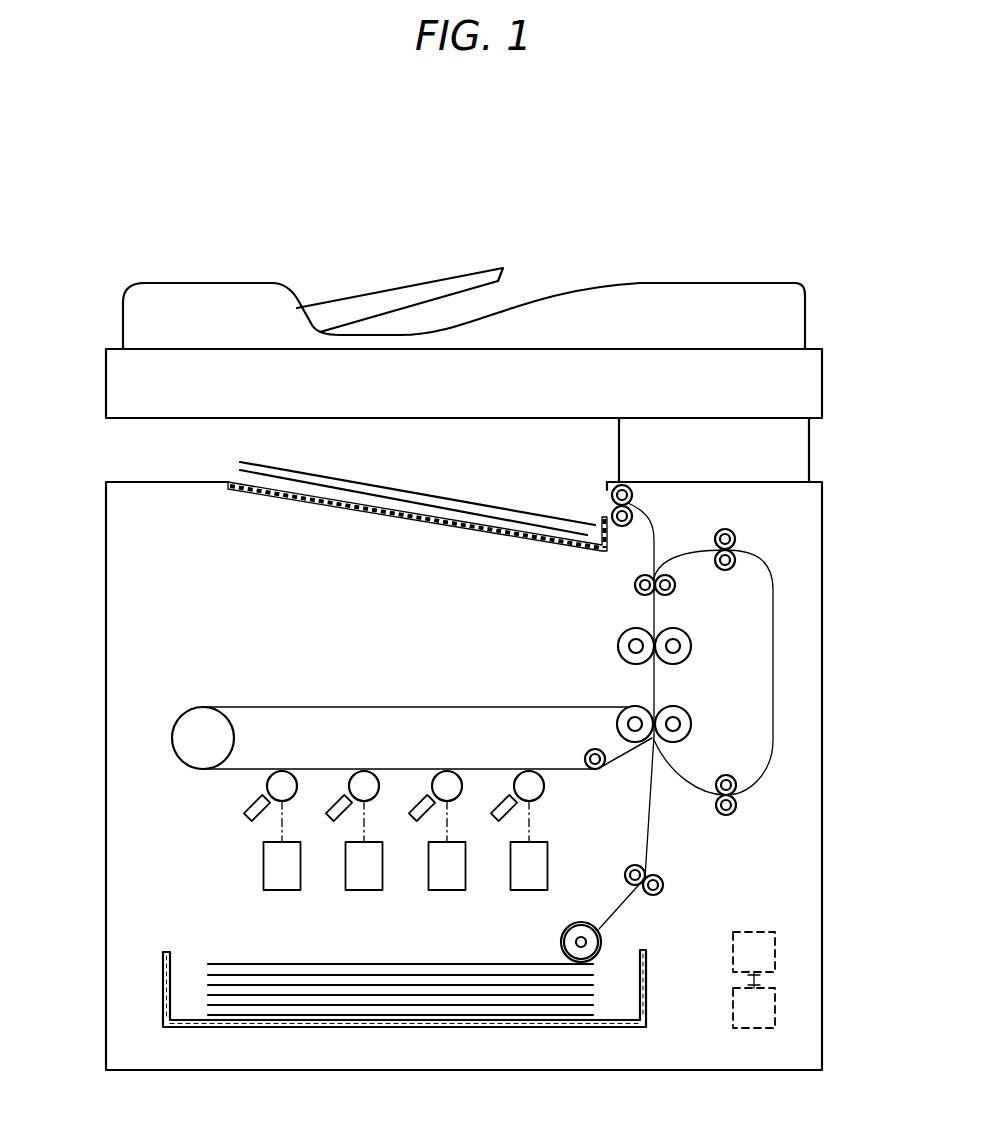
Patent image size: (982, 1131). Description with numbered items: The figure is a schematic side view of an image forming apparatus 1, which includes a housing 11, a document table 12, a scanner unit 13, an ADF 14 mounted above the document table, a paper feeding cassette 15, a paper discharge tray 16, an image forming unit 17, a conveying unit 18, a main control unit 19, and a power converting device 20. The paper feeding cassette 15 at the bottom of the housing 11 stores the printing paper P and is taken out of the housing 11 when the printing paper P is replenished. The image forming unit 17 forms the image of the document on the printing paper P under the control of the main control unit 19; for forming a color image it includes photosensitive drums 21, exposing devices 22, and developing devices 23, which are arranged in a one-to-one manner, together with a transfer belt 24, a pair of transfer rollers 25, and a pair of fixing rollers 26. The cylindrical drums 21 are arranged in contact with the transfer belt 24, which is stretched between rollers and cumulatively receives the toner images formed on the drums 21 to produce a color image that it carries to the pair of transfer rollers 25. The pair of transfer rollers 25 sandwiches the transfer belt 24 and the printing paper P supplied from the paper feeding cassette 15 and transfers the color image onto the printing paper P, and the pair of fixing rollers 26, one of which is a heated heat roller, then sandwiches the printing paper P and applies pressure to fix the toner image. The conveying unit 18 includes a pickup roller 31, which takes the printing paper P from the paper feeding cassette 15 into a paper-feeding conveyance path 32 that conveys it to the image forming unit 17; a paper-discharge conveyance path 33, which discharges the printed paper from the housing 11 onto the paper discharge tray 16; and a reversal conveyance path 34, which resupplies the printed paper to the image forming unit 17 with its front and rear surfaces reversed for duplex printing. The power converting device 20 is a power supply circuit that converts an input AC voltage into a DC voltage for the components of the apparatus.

The image forming apparatus 1 is at (470, 176).
The housing 11 is at (106, 552).
The document table 12 is at (105, 380).
The scanner unit 13 is at (230, 404).
The ADF 14 is at (216, 284).
The paper feeding cassette 15 is at (163, 985).
The paper discharge tray 16 is at (312, 499).
The image forming unit 17 is at (412, 745).
The conveying unit 18 is at (596, 612).
The main control unit 19 is at (775, 952).
The power converting device 20 is at (775, 1008).
The photosensitive drums 21 is at (282, 771).
The exposing devices 22 is at (282, 897).
The developing devices 23 is at (248, 814).
The transfer belt 24 is at (520, 706).
The pair of transfer rollers 25 is at (688, 708).
The pair of fixing rollers 26 is at (688, 628).
The pickup roller 31 is at (582, 921).
The paper-feeding conveyance path 32 is at (648, 830).
The paper-discharge conveyance path 33 is at (656, 530).
The reversal conveyance path 34 is at (775, 680).
The printing paper P is at (500, 517).